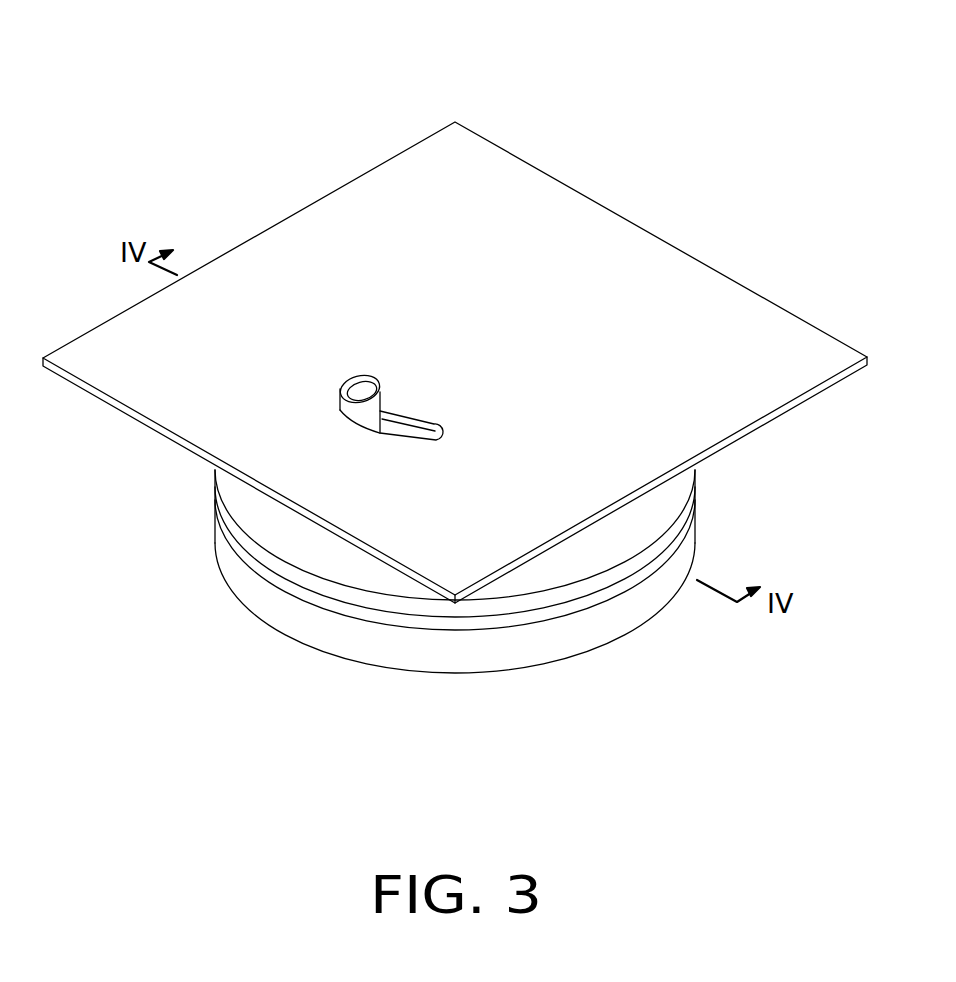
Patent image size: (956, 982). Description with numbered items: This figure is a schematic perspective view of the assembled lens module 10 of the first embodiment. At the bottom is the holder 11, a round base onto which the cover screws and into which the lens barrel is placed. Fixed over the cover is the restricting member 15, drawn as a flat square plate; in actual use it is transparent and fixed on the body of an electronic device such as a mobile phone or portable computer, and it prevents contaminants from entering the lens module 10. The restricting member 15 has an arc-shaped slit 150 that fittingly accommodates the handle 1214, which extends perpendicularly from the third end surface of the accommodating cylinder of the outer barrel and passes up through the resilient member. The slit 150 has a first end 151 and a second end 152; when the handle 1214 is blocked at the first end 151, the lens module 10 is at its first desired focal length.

The lens module 10 is at (195, 62).
The holder 11 is at (255, 593).
The restricting member 15 is at (152, 332).
The slit 150 is at (407, 433).
The first end 151 is at (340, 408).
The second end 152 is at (433, 437).
The handle 1214 is at (353, 383).